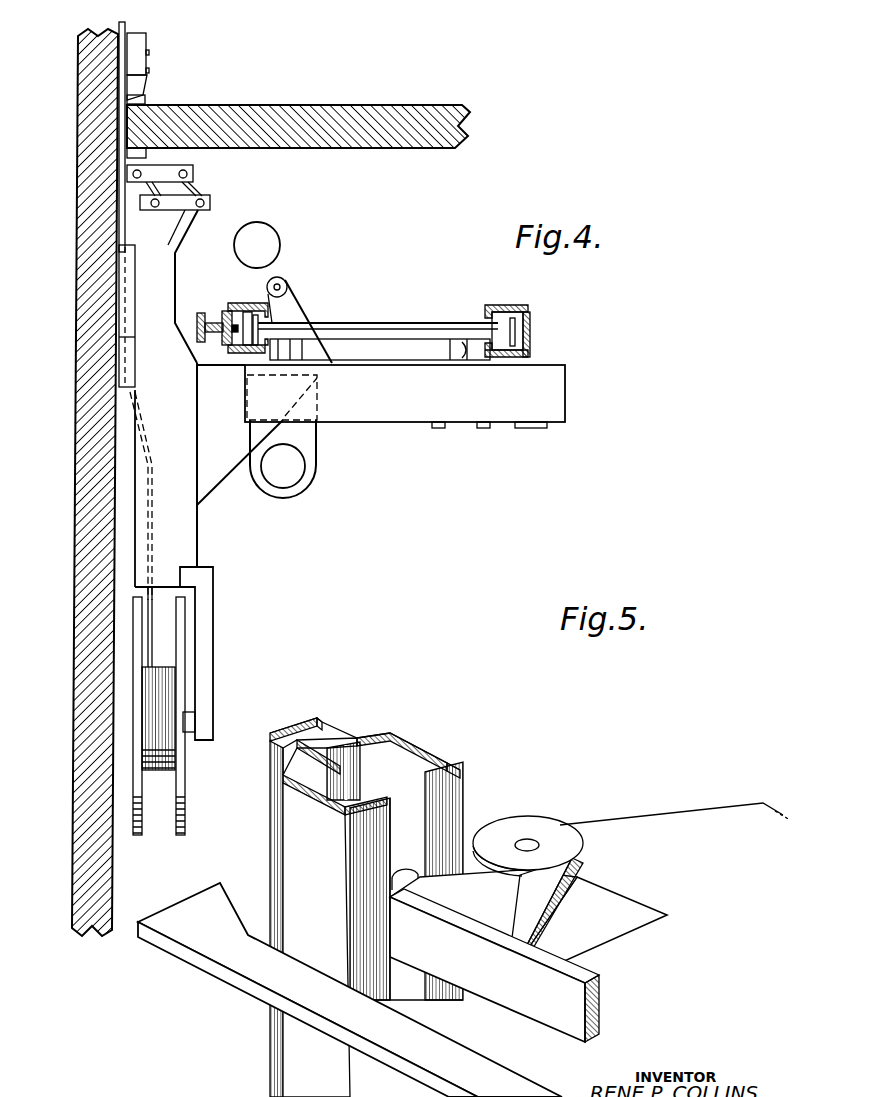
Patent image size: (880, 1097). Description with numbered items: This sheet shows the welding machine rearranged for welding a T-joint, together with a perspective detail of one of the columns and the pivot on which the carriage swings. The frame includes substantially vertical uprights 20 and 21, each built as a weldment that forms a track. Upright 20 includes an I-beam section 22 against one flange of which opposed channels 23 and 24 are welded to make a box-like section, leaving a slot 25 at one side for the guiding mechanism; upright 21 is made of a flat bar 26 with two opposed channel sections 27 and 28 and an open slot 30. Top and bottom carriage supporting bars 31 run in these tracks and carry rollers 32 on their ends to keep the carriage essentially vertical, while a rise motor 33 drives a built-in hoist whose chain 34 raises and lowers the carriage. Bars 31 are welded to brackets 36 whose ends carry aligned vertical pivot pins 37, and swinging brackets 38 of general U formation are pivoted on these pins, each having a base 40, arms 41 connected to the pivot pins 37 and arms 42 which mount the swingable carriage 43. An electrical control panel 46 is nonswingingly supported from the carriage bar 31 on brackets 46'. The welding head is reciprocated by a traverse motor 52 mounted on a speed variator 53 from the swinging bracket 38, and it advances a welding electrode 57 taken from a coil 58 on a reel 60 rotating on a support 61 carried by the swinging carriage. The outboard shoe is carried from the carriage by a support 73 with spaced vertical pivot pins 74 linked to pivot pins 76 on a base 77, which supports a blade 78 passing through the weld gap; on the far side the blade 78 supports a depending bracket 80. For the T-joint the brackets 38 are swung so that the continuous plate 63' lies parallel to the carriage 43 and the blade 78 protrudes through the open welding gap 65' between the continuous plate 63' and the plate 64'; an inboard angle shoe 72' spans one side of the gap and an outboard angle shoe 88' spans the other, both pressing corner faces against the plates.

In FIG. 4, the upright 20 is at (228, 303).
In FIG. 5, the upright 20 is at (443, 750).
In FIG. 4, the upright 21 is at (530, 312).
In FIG. 4, the I-beam section 22 is at (200, 314).
In FIG. 5, the I-beam section 22 is at (294, 730).
In FIG. 4, the channel 23 is at (258, 304).
In FIG. 5, the channel 23 is at (452, 760).
In FIG. 4, the channel 24 is at (230, 350).
In FIG. 5, the channel 24 is at (373, 936).
In FIG. 4, the slot 25 is at (272, 336).
In FIG. 5, the slot 25 is at (408, 818).
In FIG. 4, the flat bar 26 is at (532, 334).
In FIG. 4, the channel section 27 is at (492, 305).
In FIG. 4, the channel section 28 is at (466, 360).
In FIG. 4, the open slot 30 is at (452, 344).
In FIG. 4, the carriage supporting bar 31 is at (375, 324).
In FIG. 5, the carriage supporting bar 31 is at (494, 965).
In FIG. 4, the roller 32 is at (247, 346).
In FIG. 5, the roller 32 is at (408, 870).
In FIG. 4, the rise motor 33 is at (258, 246).
In FIG. 4, the chain 34 is at (312, 290).
In FIG. 5, the bracket 36 is at (483, 910).
In FIG. 4, the pivot pin 37 is at (282, 282).
In FIG. 5, the pivot pin 37 is at (527, 845).
In FIG. 4, the swinging bracket 38 is at (240, 465).
In FIG. 5, the swinging bracket 38 is at (675, 824).
In FIG. 4, the base 40 is at (282, 397).
In FIG. 5, the base 40 is at (617, 940).
In FIG. 4, the arm 41 is at (258, 326).
In FIG. 5, the arm 41 is at (577, 891).
In FIG. 5, the arm 42 is at (350, 990).
In FIG. 4, the swingable carriage 43 is at (165, 488).
In FIG. 4, the electrical control panel 46 is at (405, 396).
In FIG. 4, the bracket 46' is at (329, 391).
In FIG. 4, the traverse motor 52 is at (285, 466).
In FIG. 4, the speed variator 53 is at (308, 450).
In FIG. 4, the welding electrode 57 is at (152, 466).
In FIG. 4, the coil 58 is at (158, 770).
In FIG. 4, the reel 60 is at (186, 805).
In FIG. 4, the support 61 is at (206, 662).
In FIG. 4, the continuous plate 63' is at (73, 482).
In FIG. 4, the plate 64' is at (298, 107).
In FIG. 4, the welding gap 65' is at (80, 264).
In FIG. 4, the inboard angle shoe 72' is at (191, 158).
In FIG. 4, the support 73 is at (186, 210).
In FIG. 4, the vertical pivot pin 74 is at (157, 208).
In FIG. 4, the vertical pivot pin 76 is at (190, 176).
In FIG. 4, the base 77 is at (160, 174).
In FIG. 4, the blade 78 is at (128, 27).
In FIG. 4, the depending bracket 80 is at (138, 60).
In FIG. 4, the outboard angle shoe 88' is at (160, 89).